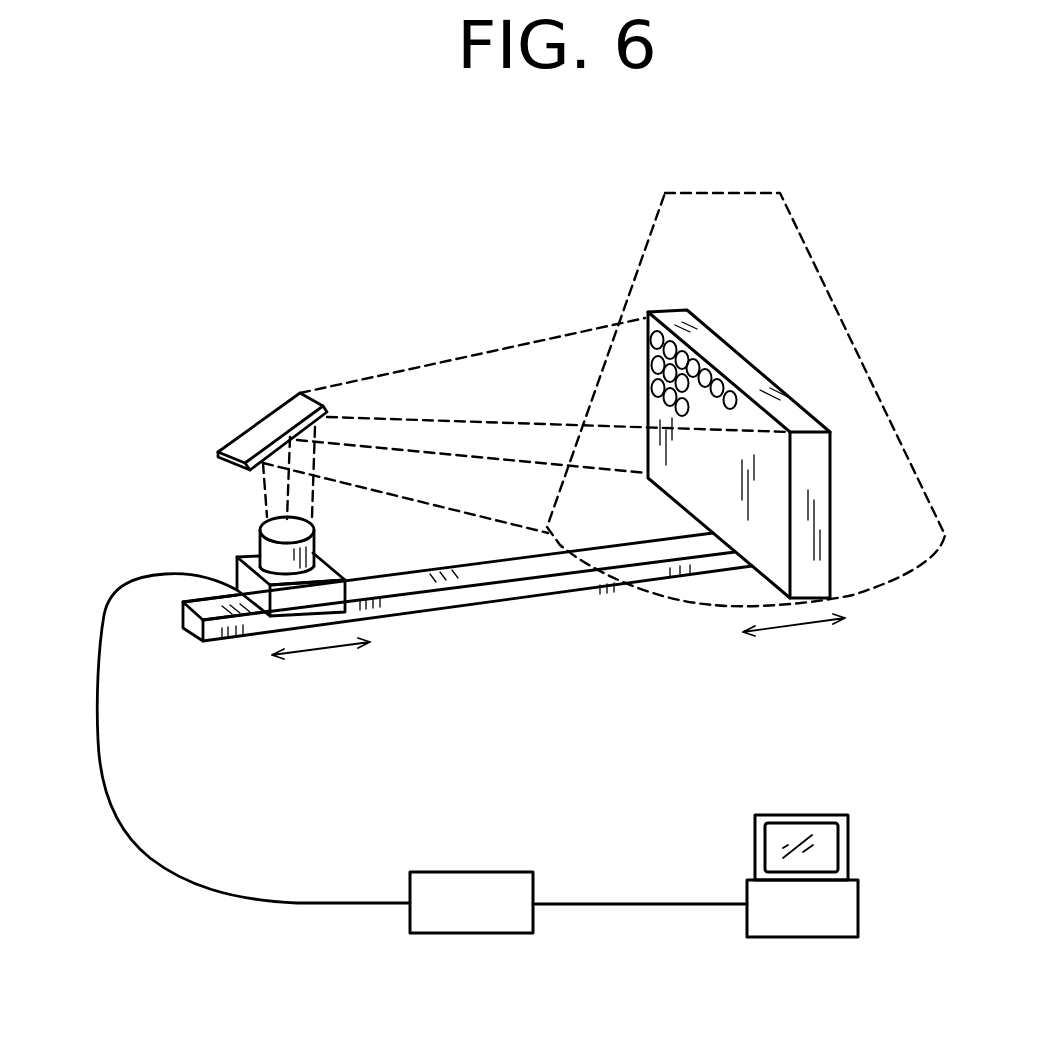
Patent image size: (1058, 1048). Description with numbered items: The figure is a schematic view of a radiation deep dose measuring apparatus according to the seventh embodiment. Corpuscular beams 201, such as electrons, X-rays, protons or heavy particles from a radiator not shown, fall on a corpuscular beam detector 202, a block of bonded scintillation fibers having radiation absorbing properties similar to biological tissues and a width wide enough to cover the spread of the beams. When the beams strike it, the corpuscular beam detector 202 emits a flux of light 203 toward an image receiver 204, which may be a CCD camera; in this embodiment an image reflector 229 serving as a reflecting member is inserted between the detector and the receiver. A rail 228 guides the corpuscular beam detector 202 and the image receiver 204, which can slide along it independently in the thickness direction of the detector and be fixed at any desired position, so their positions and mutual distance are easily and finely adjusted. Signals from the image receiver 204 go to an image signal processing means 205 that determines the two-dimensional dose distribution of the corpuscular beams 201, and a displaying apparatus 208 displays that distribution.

The corpuscular beams 201 is at (830, 290).
The corpuscular beam detector 202 is at (832, 532).
The flux of light 203 is at (455, 360).
The image receiver 204 is at (240, 558).
The image signal processing means 205 is at (457, 873).
The displaying apparatus 208 is at (804, 815).
The rail 228 is at (524, 599).
The image reflector 229 is at (258, 425).